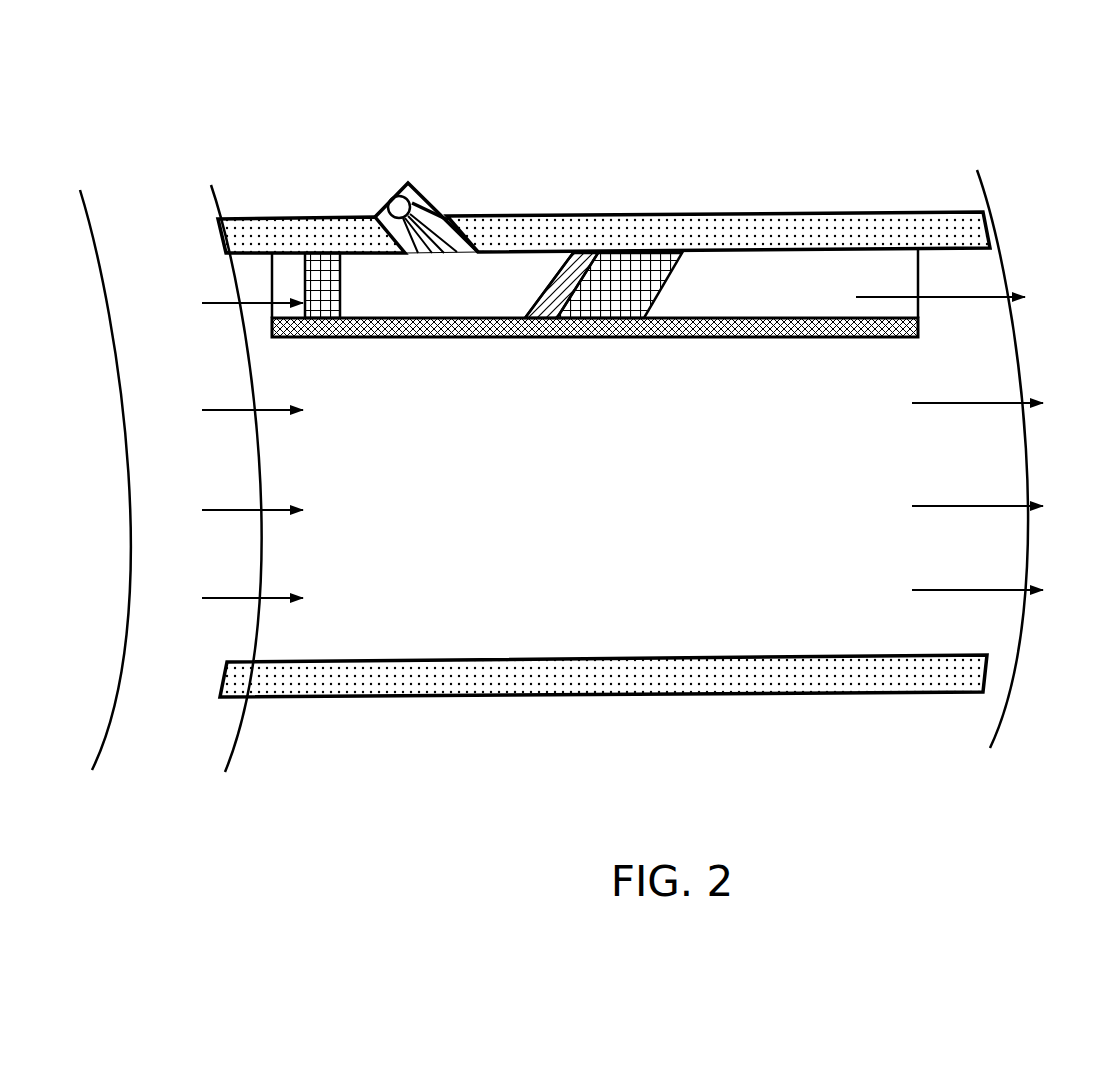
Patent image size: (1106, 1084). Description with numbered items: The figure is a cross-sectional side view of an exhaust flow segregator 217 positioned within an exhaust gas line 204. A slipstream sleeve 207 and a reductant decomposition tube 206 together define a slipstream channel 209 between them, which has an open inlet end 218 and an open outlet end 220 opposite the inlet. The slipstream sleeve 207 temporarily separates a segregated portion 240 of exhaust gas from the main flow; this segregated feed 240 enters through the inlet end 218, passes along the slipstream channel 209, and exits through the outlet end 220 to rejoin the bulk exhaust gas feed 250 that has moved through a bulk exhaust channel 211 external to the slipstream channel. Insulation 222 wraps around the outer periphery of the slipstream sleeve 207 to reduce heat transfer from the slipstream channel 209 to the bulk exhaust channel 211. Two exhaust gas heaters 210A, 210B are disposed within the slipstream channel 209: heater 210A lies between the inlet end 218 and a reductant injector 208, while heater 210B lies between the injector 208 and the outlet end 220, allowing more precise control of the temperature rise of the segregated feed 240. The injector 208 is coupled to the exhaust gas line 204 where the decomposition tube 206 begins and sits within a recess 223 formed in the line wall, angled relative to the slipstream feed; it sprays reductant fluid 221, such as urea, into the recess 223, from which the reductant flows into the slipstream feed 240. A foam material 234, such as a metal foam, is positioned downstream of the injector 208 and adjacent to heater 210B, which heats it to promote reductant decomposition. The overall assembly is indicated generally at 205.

The exhaust gas line 204 is at (383, 700).
The exhaust aftertreatment assembly 205 is at (796, 172).
The reductant decomposition tube 206 is at (643, 696).
The slipstream sleeve 207 is at (726, 322).
The reductant injector 208 is at (410, 190).
The slipstream channel 209 is at (748, 302).
The exhaust gas heater 210A is at (325, 265).
The exhaust gas heater 210B is at (625, 275).
The bulk exhaust channel 211 is at (600, 500).
The exhaust flow segregator 217 is at (581, 384).
The open inlet end 218 is at (270, 290).
The open outlet end 220 is at (918, 268).
The reductant fluid 221 is at (458, 236).
The insulation 222 is at (848, 322).
The recess 223 is at (427, 216).
The foam material 234 is at (535, 292).
The segregated exhaust gas feed 240 is at (218, 302).
The bulk exhaust gas feed 250 is at (222, 410).